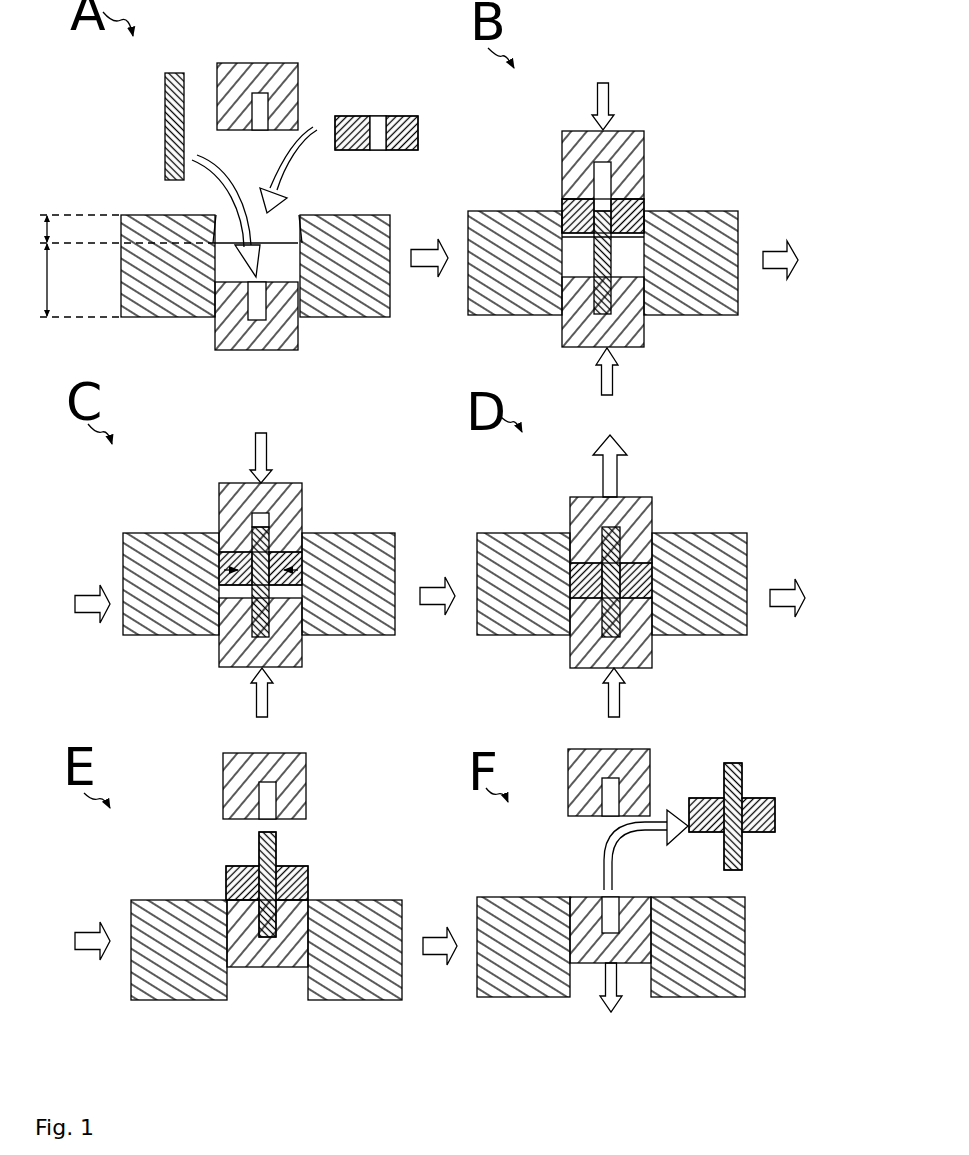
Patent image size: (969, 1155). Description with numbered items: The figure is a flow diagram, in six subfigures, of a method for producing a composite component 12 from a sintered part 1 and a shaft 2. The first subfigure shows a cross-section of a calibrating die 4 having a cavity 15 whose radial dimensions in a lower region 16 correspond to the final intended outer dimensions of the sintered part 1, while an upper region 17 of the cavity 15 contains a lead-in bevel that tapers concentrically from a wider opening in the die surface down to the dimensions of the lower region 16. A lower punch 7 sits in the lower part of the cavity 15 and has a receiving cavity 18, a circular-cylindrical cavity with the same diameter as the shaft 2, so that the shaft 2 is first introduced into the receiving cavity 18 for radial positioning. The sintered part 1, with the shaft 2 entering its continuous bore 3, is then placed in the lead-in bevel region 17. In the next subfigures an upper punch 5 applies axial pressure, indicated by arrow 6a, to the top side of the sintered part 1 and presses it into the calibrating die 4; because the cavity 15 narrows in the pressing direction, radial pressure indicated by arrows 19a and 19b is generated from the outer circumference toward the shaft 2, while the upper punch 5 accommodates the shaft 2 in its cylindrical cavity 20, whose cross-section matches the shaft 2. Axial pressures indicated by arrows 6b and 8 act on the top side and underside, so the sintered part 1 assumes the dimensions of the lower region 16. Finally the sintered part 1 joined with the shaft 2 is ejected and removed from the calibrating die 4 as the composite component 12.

The sintered part 1 is at (400, 116).
The shaft 2 is at (165, 112).
The bore 3 is at (382, 154).
The calibrating die 4 is at (160, 258).
The upper punch 5 is at (300, 72).
The arrow indicating axial pressure 6a is at (606, 102).
The arrow indicating axial pressure on top side 6b is at (262, 447).
The lower punch 7 is at (275, 337).
The arrow indicating axial pressure on underside 8 is at (262, 688).
The composite component 12 is at (322, 882).
The cavity 15 is at (218, 220).
The lower region 16 is at (80, 280).
The upper region 17 is at (127, 232).
The receiving cavity 18 is at (254, 304).
The arrow indicating radial pressure 19a is at (217, 567).
The arrow indicating radial pressure 19b is at (303, 562).
The cylindrical cavity 20 is at (256, 122).